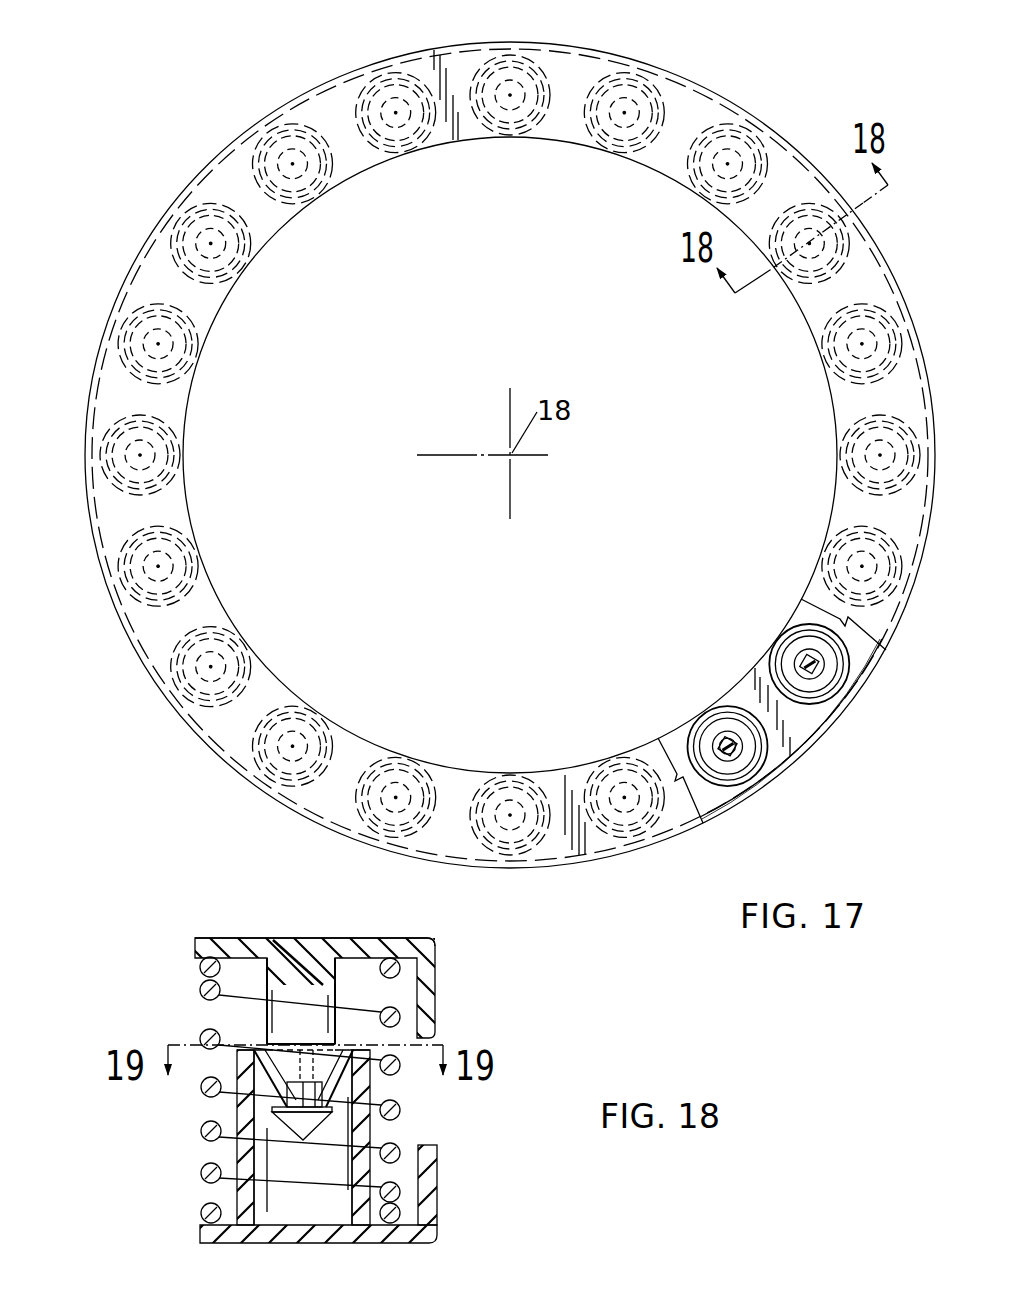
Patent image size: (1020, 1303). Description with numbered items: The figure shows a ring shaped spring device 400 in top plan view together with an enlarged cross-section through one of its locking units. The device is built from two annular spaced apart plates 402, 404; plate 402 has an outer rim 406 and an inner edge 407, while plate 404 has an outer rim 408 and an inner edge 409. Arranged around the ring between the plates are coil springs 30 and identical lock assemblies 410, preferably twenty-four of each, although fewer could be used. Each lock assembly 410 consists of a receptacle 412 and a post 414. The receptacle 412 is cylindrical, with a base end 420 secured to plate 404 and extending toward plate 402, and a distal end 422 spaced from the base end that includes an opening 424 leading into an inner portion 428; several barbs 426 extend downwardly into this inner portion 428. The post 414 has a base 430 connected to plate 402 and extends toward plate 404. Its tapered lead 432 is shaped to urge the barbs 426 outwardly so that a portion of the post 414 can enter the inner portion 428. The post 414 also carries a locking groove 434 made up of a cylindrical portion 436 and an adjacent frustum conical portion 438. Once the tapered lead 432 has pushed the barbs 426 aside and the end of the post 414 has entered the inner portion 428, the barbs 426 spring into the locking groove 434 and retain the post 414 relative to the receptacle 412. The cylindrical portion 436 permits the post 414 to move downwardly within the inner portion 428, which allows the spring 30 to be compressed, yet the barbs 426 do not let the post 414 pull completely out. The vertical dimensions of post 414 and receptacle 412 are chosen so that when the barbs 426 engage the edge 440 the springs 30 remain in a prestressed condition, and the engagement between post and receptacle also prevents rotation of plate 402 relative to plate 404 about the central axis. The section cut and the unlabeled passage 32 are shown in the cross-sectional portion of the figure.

In FIG. 17, the coil spring 30 is at (383, 72).
In FIG. 18, the coil spring 30 is at (200, 963).
In FIG. 18, the passage 32 is at (262, 1000).
In FIG. 17, the ring shaped spring device 400 is at (757, 98).
In FIG. 18, the ring shaped spring device 400 is at (445, 935).
In FIG. 17, the plate 402 is at (570, 75).
In FIG. 18, the plate 402 is at (296, 1000).
In FIG. 17, the plate 404 is at (808, 723).
In FIG. 18, the plate 404 is at (415, 1243).
In FIG. 17, the outer rim 406 is at (700, 92).
In FIG. 18, the outer rim 406 is at (337, 1022).
In FIG. 17, the inner edge 407 is at (355, 167).
In FIG. 18, the inner edge 407 is at (258, 1007).
In FIG. 17, the outer rim 408 is at (757, 787).
In FIG. 18, the outer rim 408 is at (430, 1212).
In FIG. 17, the inner edge 409 is at (762, 658).
In FIG. 18, the inner edge 409 is at (200, 1230).
In FIG. 17, the lock assembly 410 is at (752, 140).
In FIG. 18, the lock assembly 410 is at (262, 1088).
In FIG. 17, the receptacle 412 is at (236, 250).
In FIG. 18, the receptacle 412 is at (372, 1150).
In FIG. 17, the post 414 is at (228, 660).
In FIG. 18, the post 414 is at (290, 985).
In FIG. 18, the base end 420 is at (437, 1165).
In FIG. 17, the distal end 422 is at (728, 743).
In FIG. 18, the distal end 422 is at (350, 1068).
In FIG. 18, the opening 424 is at (262, 1050).
In FIG. 18, the barb 426 is at (257, 1073).
In FIG. 18, the inner portion 428 is at (268, 1195).
In FIG. 18, the base 430 is at (340, 983).
In FIG. 18, the tapered lead 432 is at (312, 1133).
In FIG. 18, the locking groove 434 is at (335, 1100).
In FIG. 18, the cylindrical portion 436 is at (290, 1100).
In FIG. 18, the frustum conical portion 438 is at (337, 1044).
In FIG. 18, the edge 440 is at (290, 1108).